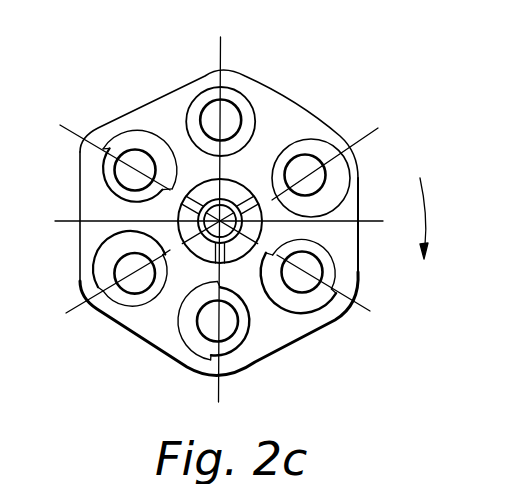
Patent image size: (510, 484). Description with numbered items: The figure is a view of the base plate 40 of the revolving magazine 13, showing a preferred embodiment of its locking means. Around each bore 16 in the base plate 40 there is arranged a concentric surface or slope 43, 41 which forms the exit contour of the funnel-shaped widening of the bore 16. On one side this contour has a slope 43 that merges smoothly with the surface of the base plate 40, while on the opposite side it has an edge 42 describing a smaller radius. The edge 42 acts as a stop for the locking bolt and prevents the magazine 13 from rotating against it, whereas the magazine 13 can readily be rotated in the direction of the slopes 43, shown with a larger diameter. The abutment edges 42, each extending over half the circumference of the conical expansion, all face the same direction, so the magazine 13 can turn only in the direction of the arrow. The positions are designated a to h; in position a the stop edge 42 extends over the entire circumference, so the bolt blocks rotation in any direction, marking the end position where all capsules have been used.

The revolving magazine 13 is at (98, 110).
The bore 16 is at (210, 118).
The base plate 40 is at (147, 321).
The concentric surface 41 is at (226, 322).
The edge 42 is at (252, 105).
The slope 43 is at (305, 285).